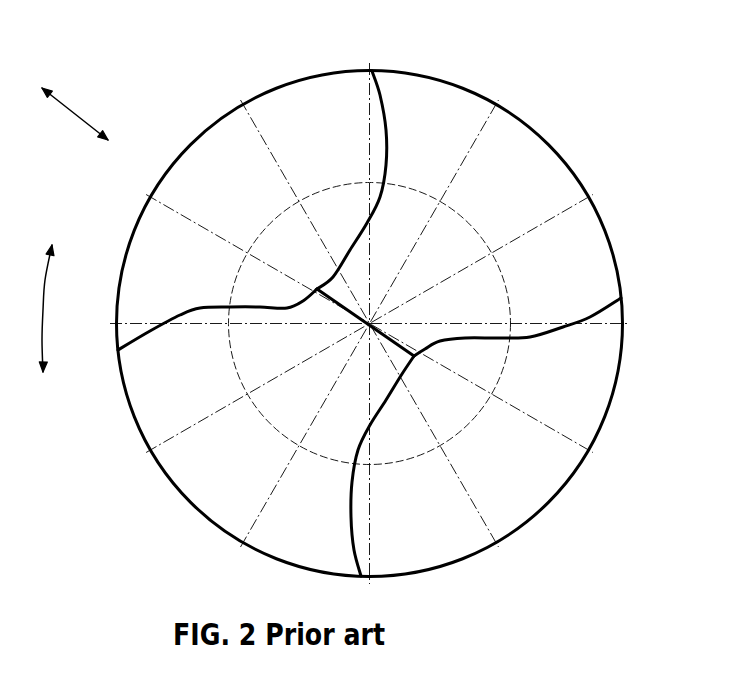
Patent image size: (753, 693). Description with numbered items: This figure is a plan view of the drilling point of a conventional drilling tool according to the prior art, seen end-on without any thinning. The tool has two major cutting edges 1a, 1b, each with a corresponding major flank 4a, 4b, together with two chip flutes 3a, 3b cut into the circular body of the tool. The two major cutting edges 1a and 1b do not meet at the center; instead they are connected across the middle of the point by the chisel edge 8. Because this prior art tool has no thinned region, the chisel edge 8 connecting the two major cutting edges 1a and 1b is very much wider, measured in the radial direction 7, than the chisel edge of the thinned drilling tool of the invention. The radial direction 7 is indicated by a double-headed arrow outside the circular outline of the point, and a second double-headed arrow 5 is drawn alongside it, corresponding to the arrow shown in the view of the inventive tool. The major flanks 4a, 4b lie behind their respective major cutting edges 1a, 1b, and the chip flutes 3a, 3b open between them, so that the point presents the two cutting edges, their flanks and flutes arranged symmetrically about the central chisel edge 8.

The major cutting edge 1a is at (383, 120).
The major cutting edge 1b is at (353, 522).
The chip flute 3a is at (210, 167).
The chip flute 3b is at (581, 392).
The major flank 4a is at (506, 167).
The major flank 4b is at (210, 482).
The direction arrow 5 is at (45, 308).
The radial direction 7 is at (75, 113).
The chisel edge 8 is at (421, 324).